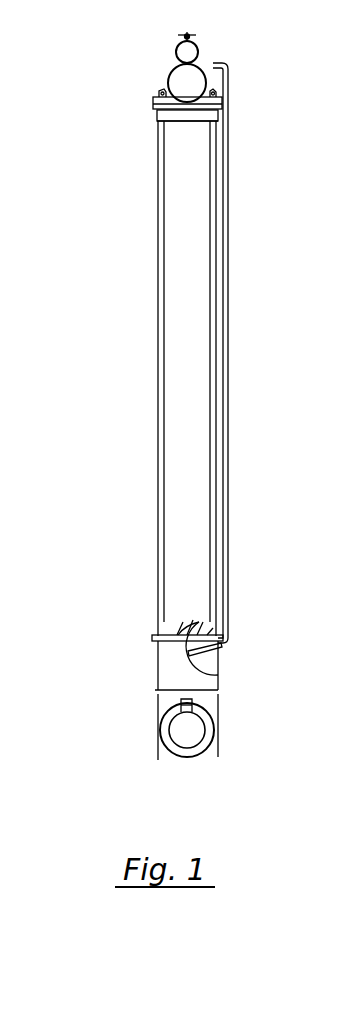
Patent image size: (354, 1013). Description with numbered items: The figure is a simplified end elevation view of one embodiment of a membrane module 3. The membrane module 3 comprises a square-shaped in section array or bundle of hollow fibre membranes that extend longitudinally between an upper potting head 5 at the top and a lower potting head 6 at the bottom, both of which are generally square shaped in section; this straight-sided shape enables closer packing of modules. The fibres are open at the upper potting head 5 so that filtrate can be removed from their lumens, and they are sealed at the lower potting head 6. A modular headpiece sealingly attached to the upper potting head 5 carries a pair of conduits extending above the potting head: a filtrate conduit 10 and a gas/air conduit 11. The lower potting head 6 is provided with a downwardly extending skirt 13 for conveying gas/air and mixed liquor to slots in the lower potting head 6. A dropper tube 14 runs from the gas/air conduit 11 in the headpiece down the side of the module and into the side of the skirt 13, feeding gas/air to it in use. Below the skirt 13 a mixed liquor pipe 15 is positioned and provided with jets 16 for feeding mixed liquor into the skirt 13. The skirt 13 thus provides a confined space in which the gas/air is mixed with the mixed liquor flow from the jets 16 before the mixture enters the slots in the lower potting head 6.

The membrane module 3 is at (150, 328).
The upper potting head 5 is at (204, 113).
The lower potting head 6 is at (163, 633).
The filtrate conduit 10 is at (186, 85).
The gas/air conduit 11 is at (196, 50).
The skirt 13 is at (163, 670).
The dropper tube 14 is at (230, 411).
The mixed liquor pipe 15 is at (208, 747).
The jets 16 is at (200, 700).